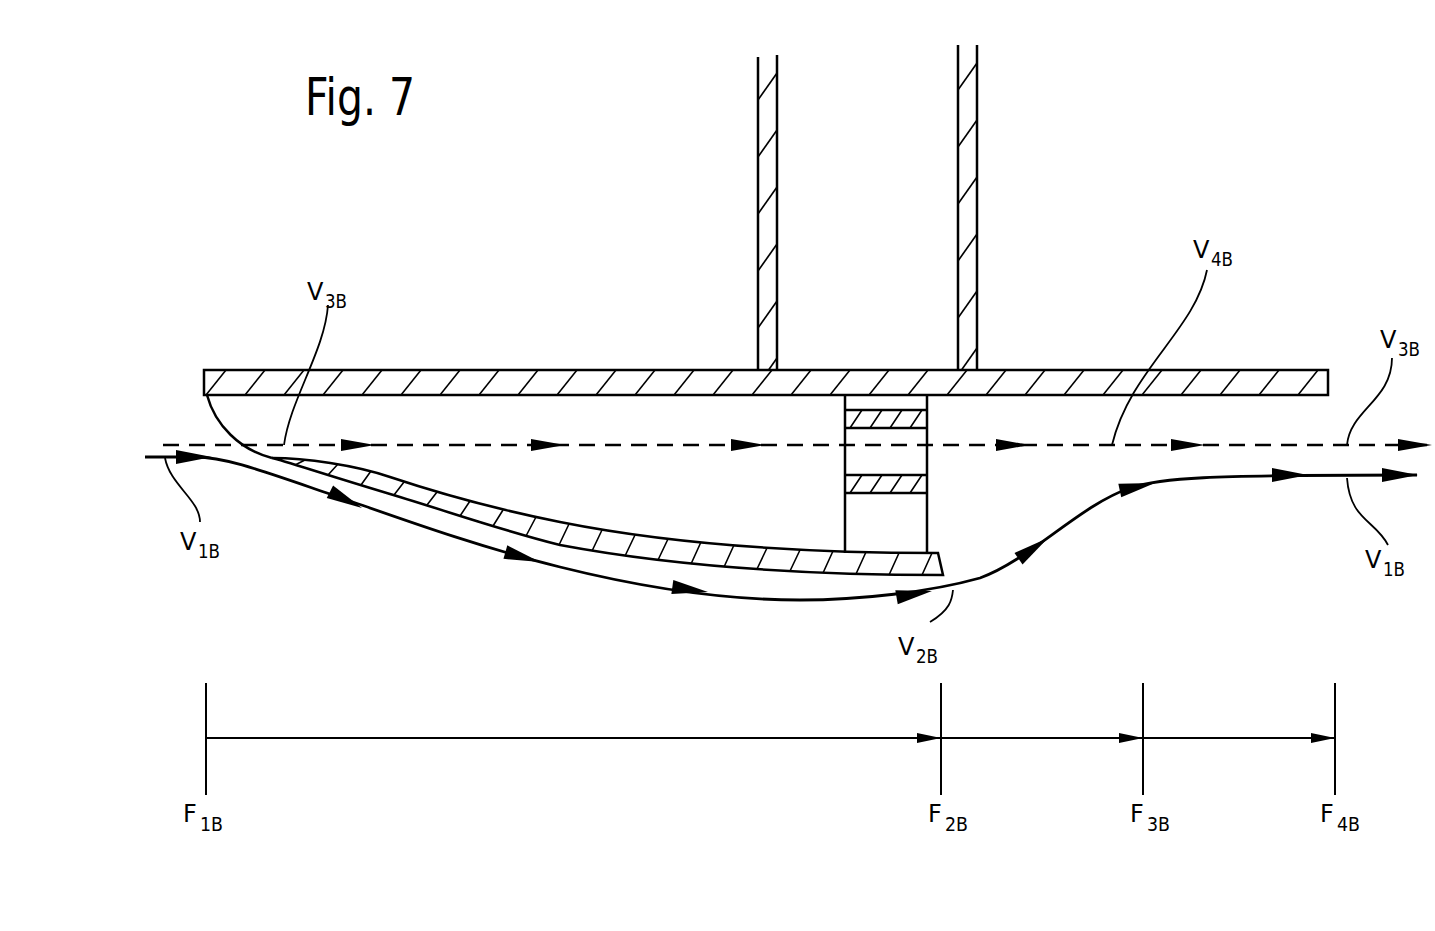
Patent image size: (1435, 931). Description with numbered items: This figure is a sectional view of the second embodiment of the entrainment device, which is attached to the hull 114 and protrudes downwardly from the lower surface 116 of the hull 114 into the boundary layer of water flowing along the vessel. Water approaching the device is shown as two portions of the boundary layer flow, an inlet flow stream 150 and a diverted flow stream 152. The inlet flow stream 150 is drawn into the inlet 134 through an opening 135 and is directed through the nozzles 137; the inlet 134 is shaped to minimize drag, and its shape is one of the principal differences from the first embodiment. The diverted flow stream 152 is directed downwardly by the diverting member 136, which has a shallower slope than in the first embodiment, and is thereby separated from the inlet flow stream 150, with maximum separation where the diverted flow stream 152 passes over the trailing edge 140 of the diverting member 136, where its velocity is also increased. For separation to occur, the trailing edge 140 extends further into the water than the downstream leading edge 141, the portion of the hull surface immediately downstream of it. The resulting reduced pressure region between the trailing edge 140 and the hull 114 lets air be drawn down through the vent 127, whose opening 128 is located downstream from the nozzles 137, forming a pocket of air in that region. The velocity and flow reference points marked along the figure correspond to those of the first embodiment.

The vent 127 is at (906, 157).
The opening 135 is at (247, 419).
The inlet 134 is at (588, 413).
The lower surface 116 is at (1095, 382).
The hull 114 is at (1210, 378).
The opening 128 is at (900, 435).
The nozzle 137 is at (905, 435).
The downstream leading edge 141 is at (930, 370).
The diverted flow stream 152 is at (452, 537).
The diverting member 136 is at (730, 557).
The inlet flow stream 150 is at (478, 440).
The trailing edge 140 is at (933, 573).